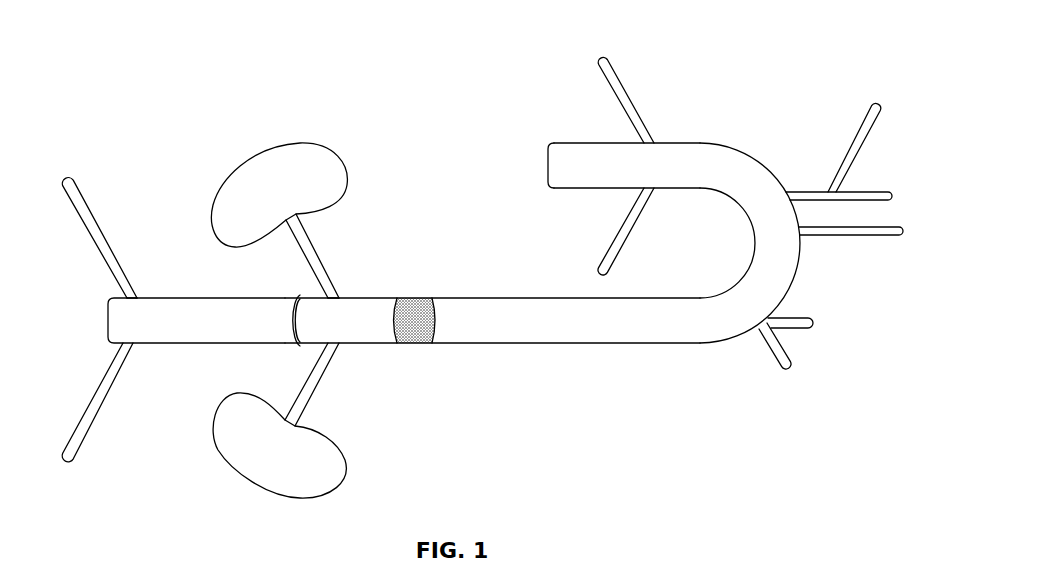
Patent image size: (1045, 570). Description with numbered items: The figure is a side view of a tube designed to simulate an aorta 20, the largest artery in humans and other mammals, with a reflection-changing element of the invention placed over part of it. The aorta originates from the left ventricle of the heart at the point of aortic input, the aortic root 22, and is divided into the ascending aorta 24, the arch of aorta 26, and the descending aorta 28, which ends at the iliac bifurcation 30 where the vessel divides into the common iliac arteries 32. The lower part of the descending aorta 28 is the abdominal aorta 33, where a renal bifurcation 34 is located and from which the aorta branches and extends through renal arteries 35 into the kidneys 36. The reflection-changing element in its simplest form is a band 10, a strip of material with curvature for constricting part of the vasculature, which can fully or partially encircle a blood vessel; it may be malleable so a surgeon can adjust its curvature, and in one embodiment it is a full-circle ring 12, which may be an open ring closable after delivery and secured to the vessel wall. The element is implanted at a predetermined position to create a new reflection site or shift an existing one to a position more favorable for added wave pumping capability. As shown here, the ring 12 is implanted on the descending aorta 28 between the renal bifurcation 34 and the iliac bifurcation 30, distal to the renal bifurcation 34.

The band 10 is at (428, 350).
The full-circle ring 12 is at (292, 347).
The aorta 20 is at (594, 231).
The aortic root 22 is at (548, 166).
The ascending aorta 24 is at (682, 175).
The arch of aorta 26 is at (802, 266).
The descending aorta 28 is at (611, 345).
The iliac bifurcation 30 is at (141, 295).
The common iliac arteries 32 is at (90, 243).
The abdominal aorta 33 is at (189, 318).
The renal bifurcation 34 is at (342, 292).
The renal arteries 35 is at (300, 254).
The kidneys 36 is at (262, 200).